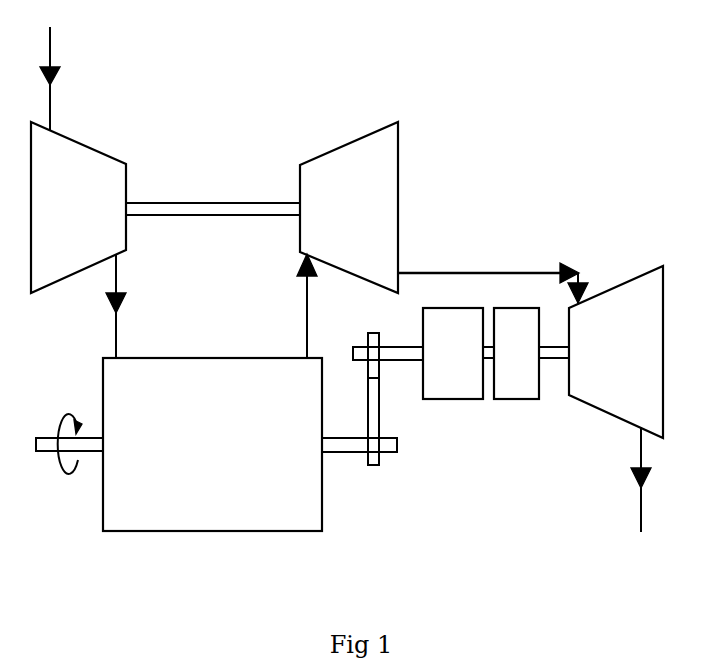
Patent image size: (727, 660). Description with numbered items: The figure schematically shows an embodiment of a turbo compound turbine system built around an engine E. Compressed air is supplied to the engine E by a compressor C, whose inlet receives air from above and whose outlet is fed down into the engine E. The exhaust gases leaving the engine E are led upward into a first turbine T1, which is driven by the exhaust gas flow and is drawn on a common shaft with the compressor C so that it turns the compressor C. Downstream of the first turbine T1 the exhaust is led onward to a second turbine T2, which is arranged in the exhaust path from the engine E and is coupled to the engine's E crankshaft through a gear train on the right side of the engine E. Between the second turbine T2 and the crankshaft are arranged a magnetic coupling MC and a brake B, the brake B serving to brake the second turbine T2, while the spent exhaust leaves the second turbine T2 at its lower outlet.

The compressor C is at (78, 192).
The first turbine T1 is at (442, 240).
The second turbine T2 is at (616, 399).
The engine E is at (216, 444).
The magnetic coupling MC is at (458, 353).
The brake B is at (531, 353).